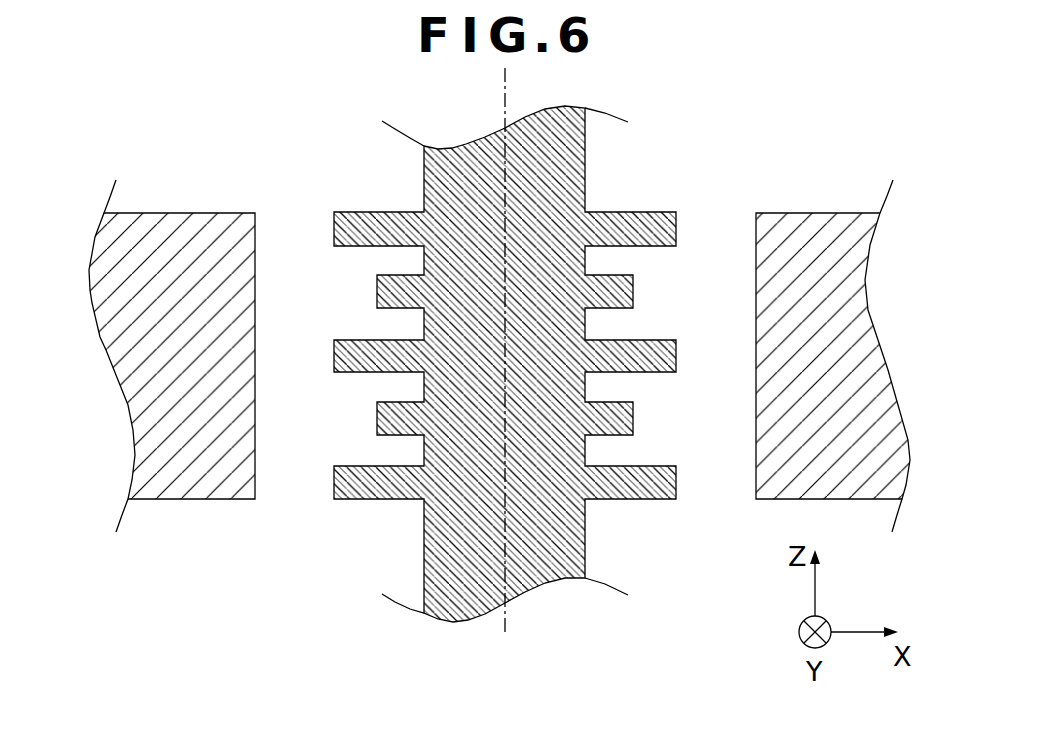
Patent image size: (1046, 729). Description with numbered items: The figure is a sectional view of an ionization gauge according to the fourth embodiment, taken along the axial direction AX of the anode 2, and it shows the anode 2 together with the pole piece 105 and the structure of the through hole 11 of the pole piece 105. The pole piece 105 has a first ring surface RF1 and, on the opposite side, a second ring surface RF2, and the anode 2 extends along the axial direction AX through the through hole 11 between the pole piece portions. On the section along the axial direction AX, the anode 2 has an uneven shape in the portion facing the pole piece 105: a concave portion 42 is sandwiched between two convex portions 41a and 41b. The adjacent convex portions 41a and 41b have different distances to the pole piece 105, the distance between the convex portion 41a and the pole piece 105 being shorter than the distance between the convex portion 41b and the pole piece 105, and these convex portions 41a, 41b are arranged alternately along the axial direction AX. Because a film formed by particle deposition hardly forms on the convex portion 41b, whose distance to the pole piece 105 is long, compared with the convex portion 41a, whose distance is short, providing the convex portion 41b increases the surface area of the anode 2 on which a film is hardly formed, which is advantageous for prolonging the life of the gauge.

The anode 2 is at (424, 556).
The axial direction AX is at (505, 98).
The convex portion 41a is at (676, 222).
The convex portion 41b is at (633, 291).
The concave portion 42 is at (585, 259).
The pole piece 105 is at (220, 534).
The first ring surface RF1 is at (191, 213).
The second ring surface RF2 is at (157, 499).
The through hole 11 is at (712, 510).